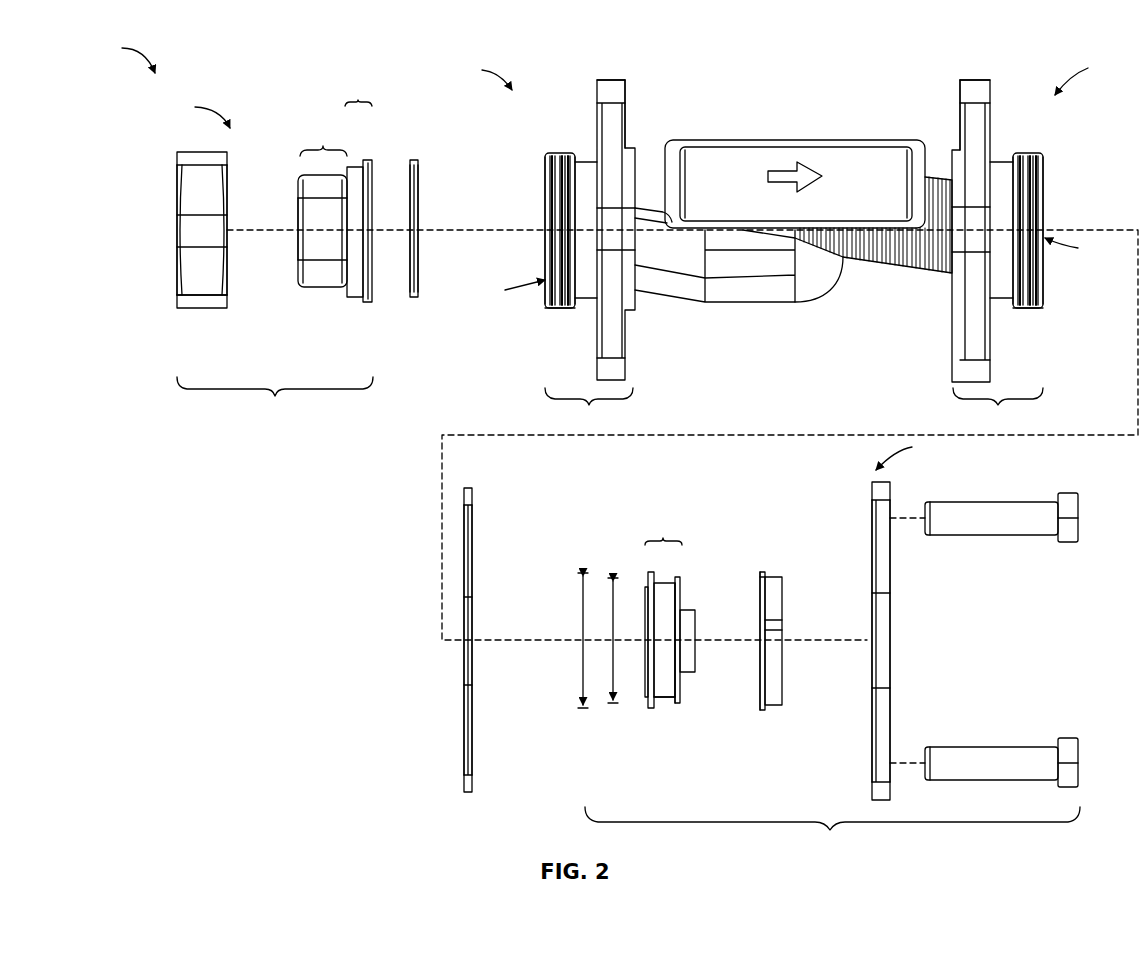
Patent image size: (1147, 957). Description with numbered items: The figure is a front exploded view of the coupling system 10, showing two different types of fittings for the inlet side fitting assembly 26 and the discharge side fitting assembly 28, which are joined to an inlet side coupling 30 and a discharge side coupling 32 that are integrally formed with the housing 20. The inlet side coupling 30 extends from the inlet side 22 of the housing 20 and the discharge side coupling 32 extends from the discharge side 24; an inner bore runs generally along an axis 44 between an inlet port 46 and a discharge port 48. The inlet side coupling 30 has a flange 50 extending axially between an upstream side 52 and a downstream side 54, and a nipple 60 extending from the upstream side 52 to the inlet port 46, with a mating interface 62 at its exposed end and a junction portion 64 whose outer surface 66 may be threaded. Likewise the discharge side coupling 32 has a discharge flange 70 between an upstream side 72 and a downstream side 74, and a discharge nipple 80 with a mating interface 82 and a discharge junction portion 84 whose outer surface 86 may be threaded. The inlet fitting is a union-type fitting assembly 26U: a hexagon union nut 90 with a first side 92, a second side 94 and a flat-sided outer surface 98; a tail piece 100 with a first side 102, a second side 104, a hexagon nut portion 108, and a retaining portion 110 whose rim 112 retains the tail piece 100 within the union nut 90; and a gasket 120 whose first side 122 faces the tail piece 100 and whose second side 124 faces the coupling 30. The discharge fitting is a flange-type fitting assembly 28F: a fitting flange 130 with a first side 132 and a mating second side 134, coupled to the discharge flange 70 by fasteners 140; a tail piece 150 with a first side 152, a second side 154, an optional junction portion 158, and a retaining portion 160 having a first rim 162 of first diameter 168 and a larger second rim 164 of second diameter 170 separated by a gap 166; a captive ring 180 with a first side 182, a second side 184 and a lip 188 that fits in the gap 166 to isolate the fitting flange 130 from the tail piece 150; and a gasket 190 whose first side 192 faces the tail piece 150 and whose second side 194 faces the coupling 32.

The coupling system 10 is at (121, 55).
The union-type fitting assembly 26U is at (187, 111).
The outer surface 98 is at (185, 193).
The first side 92 is at (177, 270).
The second side 94 is at (228, 280).
The union nut 90 is at (205, 292).
The tail piece 100 is at (320, 282).
The first side 102 is at (294, 245).
The second side 104 is at (368, 294).
The rim 112 is at (366, 172).
The nut portion 108 is at (323, 141).
The retaining portion 110 is at (358, 91).
The gasket 120 is at (412, 165).
The second side 124 is at (418, 243).
The first side 122 is at (413, 290).
The inlet side fitting assembly 26 is at (275, 402).
The inlet side 22 is at (483, 75).
The mating interface 62 is at (544, 183).
The outer surface 66 is at (548, 150).
The junction portion 64 is at (562, 152).
The nipple 60 is at (555, 308).
The inlet port 46 is at (515, 294).
The flange 50 is at (627, 346).
The upstream side 52 is at (597, 93).
The downstream side 54 is at (630, 118).
The inlet side coupling 30 is at (589, 407).
The housing 20 is at (720, 395).
The axis 44 is at (770, 235).
The discharge flange 70 is at (960, 343).
The upstream side 72 is at (958, 93).
The downstream side 74 is at (992, 92).
The mating interface 82 is at (1045, 192).
The discharge junction portion 84 is at (1025, 150).
The outer surface 86 is at (1040, 150).
The discharge nipple 80 is at (1028, 308).
The discharge port 48 is at (1074, 252).
The discharge side 24 is at (1087, 77).
The discharge side coupling 32 is at (998, 408).
The gasket 190 is at (470, 778).
The first side 192 is at (472, 742).
The second side 194 is at (463, 770).
The second diameter 170 is at (583, 610).
The first diameter 168 is at (612, 655).
The second side 154 is at (646, 700).
The second rim 164 is at (650, 575).
The tail piece 150 is at (662, 697).
The gap 166 is at (668, 575).
The retaining portion 160 is at (663, 530).
The junction portion 158 is at (690, 620).
The first side 152 is at (678, 695).
The first rim 162 is at (676, 702).
The captive ring 180 is at (773, 702).
The first side 182 is at (783, 693).
The second side 184 is at (762, 580).
The lip 188 is at (762, 572).
The fitting flange 130 is at (880, 790).
The first side 132 is at (893, 655).
The second side 134 is at (868, 775).
The fasteners 140 is at (985, 510).
The flange-type fitting assembly 28F is at (916, 454).
The discharge side fitting assembly 28 is at (832, 833).